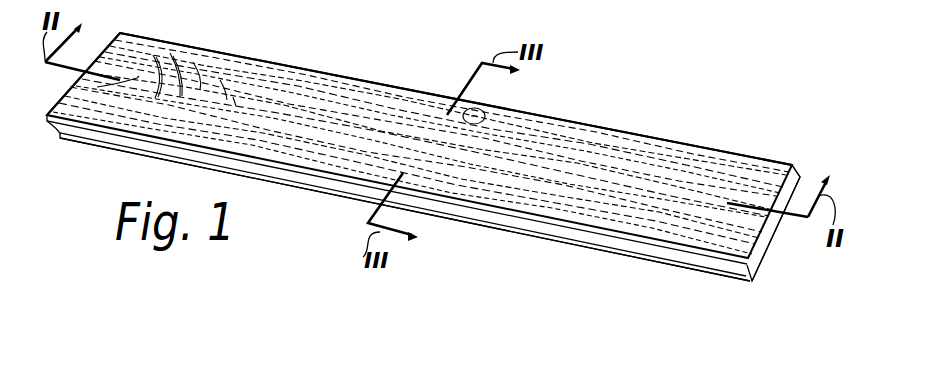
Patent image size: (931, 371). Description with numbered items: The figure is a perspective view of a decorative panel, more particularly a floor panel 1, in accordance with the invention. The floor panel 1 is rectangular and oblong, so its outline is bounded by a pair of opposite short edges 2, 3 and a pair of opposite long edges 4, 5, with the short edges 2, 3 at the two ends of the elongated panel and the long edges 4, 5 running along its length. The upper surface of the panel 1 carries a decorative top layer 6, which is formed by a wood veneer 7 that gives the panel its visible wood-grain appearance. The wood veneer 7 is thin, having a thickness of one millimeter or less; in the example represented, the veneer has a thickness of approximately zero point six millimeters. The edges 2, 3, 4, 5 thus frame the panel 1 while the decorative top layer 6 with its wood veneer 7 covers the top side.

The floor panel 1 is at (657, 117).
The short edge 2 is at (62, 94).
The short edge 3 is at (800, 158).
The long edge 4 is at (720, 148).
The long edge 5 is at (592, 252).
The decorative top layer 6 is at (276, 107).
The wood veneer 7 is at (537, 160).